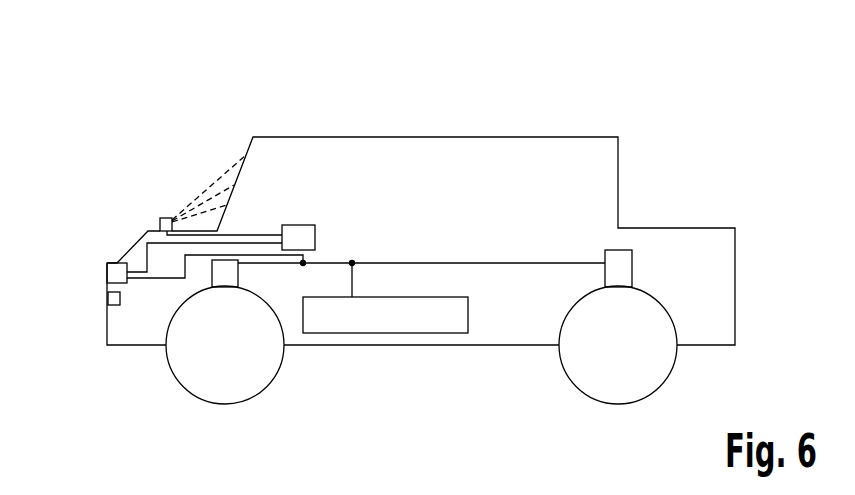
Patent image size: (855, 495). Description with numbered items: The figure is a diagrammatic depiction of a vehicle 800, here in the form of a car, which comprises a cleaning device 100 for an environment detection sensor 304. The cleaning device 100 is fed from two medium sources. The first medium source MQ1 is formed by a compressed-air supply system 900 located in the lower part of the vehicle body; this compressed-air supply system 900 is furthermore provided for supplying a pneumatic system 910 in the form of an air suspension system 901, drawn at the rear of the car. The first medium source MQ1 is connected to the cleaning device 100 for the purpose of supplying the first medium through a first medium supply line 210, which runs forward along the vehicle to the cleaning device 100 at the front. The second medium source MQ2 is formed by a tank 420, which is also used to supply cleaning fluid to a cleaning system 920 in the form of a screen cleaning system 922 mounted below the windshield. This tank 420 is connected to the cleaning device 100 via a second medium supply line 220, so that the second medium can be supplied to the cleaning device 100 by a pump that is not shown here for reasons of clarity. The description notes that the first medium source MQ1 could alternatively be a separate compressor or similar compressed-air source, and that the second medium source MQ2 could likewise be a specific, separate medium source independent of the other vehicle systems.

The vehicle 800 is at (551, 46).
The cleaning device 100 is at (104, 275).
The environment detection sensor 304 is at (108, 297).
The second medium supply line 220 is at (155, 231).
The cleaning system 920 is at (187, 156).
The screen cleaning system 922 is at (173, 210).
The first medium supply line 210 is at (156, 280).
The tank 420 is at (341, 167).
The second medium source MQ2 is at (312, 210).
The compressed-air supply system 900 is at (389, 364).
The first medium source MQ1 is at (424, 345).
The air suspension system 901 is at (711, 232).
The pneumatic system 910 is at (641, 262).